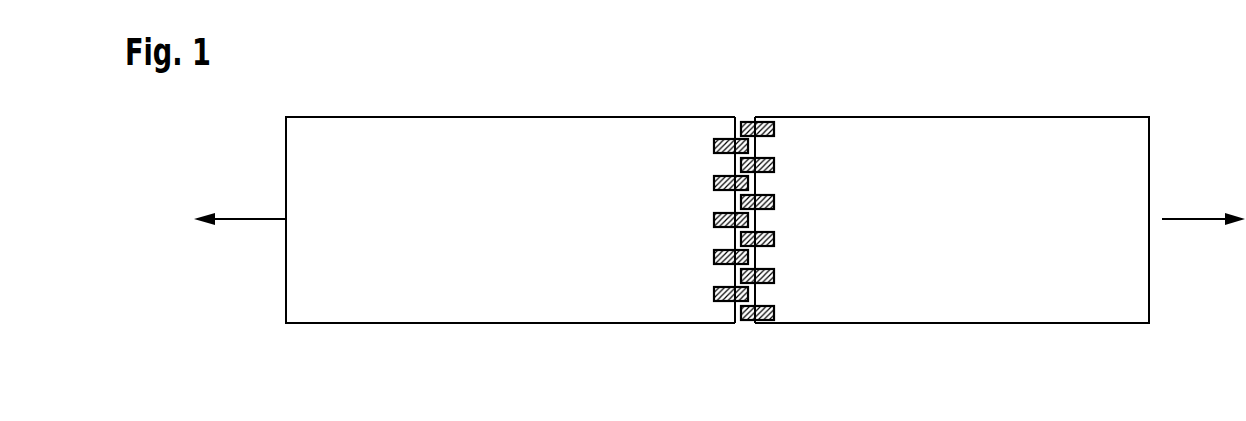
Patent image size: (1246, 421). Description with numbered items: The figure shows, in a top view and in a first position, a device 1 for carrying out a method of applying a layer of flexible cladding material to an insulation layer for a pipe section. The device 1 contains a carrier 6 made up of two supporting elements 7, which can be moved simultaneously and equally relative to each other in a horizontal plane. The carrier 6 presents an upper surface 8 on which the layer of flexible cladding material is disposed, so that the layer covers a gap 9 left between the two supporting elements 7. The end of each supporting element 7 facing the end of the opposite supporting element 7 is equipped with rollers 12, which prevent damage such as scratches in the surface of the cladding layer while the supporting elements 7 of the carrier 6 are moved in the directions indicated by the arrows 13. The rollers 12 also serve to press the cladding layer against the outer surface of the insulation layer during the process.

The device 1 is at (994, 81).
The carrier 6 is at (777, 324).
The supporting elements 7 is at (512, 255).
The upper surface 8 is at (590, 232).
The gap 9 is at (741, 343).
The rollers 12 is at (765, 121).
The arrows 13 is at (242, 219).